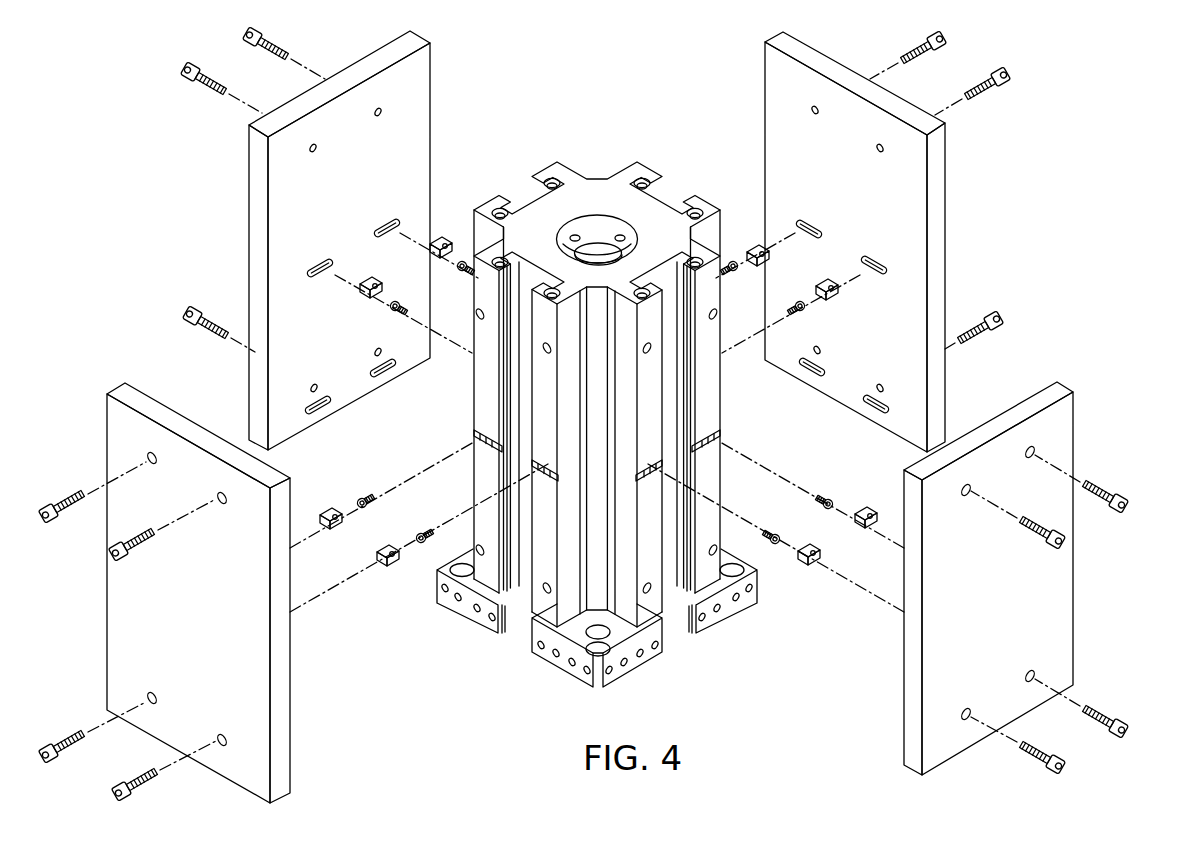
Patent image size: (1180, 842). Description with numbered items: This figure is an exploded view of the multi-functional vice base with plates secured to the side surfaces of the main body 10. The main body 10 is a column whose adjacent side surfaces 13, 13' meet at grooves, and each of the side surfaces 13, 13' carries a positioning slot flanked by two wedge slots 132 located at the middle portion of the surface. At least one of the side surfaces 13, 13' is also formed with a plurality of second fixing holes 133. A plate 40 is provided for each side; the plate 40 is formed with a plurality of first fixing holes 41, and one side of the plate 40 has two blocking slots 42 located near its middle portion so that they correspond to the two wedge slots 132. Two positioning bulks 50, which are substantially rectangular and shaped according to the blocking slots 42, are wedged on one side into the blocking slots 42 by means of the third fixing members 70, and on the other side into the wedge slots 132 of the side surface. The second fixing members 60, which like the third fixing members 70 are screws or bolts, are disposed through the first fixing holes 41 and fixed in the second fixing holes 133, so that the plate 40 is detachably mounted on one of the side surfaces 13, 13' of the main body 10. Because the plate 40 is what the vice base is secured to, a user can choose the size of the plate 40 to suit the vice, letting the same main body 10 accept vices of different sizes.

The main body 10 is at (590, 154).
The side surface 13 is at (622, 660).
The side surface 13' is at (504, 635).
The plate 40 is at (418, 113).
The first fixing hole 41 is at (147, 458).
The blocking slot 42 is at (318, 270).
The positioning bulk 50 is at (438, 242).
The second fixing member 60 is at (68, 497).
The third fixing member 70 is at (458, 253).
The wedge slot 132 is at (553, 474).
The second fixing hole 133 is at (716, 318).